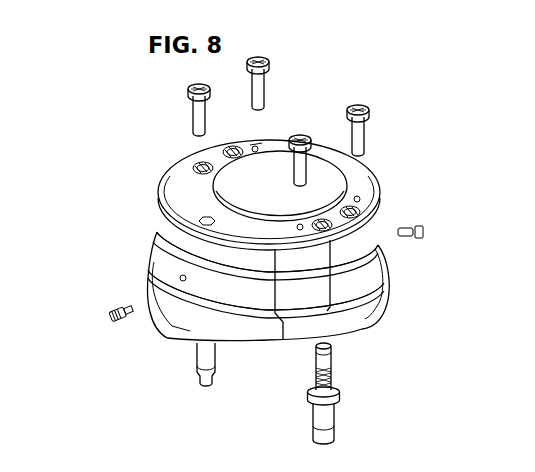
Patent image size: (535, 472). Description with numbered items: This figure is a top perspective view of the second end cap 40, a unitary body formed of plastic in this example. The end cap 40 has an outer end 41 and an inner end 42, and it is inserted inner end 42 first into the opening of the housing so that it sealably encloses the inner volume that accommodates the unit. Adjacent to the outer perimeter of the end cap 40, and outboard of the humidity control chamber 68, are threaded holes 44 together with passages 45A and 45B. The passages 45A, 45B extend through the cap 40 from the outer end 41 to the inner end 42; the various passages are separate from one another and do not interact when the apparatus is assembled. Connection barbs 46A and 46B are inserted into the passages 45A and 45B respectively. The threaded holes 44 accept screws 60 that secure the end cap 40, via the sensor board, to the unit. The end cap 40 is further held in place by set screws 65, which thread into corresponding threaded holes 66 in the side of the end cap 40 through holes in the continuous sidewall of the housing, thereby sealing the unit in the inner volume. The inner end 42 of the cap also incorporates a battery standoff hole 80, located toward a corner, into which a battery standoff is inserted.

The end cap 40 is at (381, 304).
The outer end 41 is at (255, 342).
The inner end 42 is at (360, 177).
The threaded holes 44 is at (196, 170).
The passage 45A is at (381, 258).
The passage 45B is at (186, 164).
The connection barb 46A is at (326, 430).
The connection barb 46B is at (208, 377).
The screws 60 is at (356, 108).
The set screws 65 is at (108, 311).
The threaded holes 66 is at (185, 281).
The humidity control chamber 68 is at (291, 208).
The battery standoff hole 80 is at (197, 221).